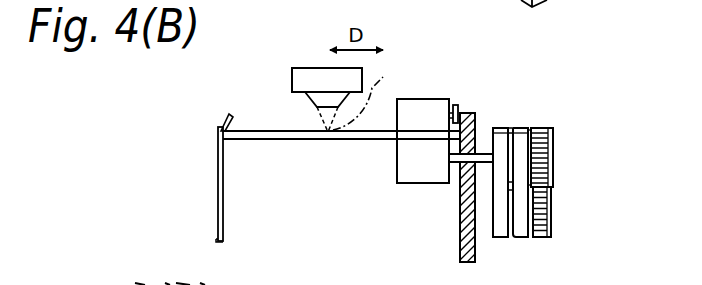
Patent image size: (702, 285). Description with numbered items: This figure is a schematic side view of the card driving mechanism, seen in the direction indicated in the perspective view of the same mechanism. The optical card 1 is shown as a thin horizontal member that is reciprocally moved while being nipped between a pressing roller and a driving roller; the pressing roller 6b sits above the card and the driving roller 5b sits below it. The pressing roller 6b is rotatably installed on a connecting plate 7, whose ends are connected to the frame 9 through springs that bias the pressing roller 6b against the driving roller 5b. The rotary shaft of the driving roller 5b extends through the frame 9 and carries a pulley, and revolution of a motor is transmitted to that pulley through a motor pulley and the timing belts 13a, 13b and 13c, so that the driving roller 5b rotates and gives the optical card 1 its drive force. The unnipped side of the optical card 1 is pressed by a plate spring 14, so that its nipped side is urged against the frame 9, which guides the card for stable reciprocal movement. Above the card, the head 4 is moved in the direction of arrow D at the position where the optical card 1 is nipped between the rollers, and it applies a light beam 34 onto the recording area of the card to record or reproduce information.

The optical card 1 is at (265, 131).
The plate spring 14 is at (219, 127).
The head 4 is at (312, 73).
The light beam 34 is at (373, 95).
The pressing roller 6b is at (425, 108).
The driving roller 5b is at (422, 172).
The connecting plate 7 is at (463, 106).
The frame 9 is at (472, 247).
The timing belt 13b is at (502, 128).
The timing belt 13c is at (523, 128).
The timing belt 13a is at (547, 217).